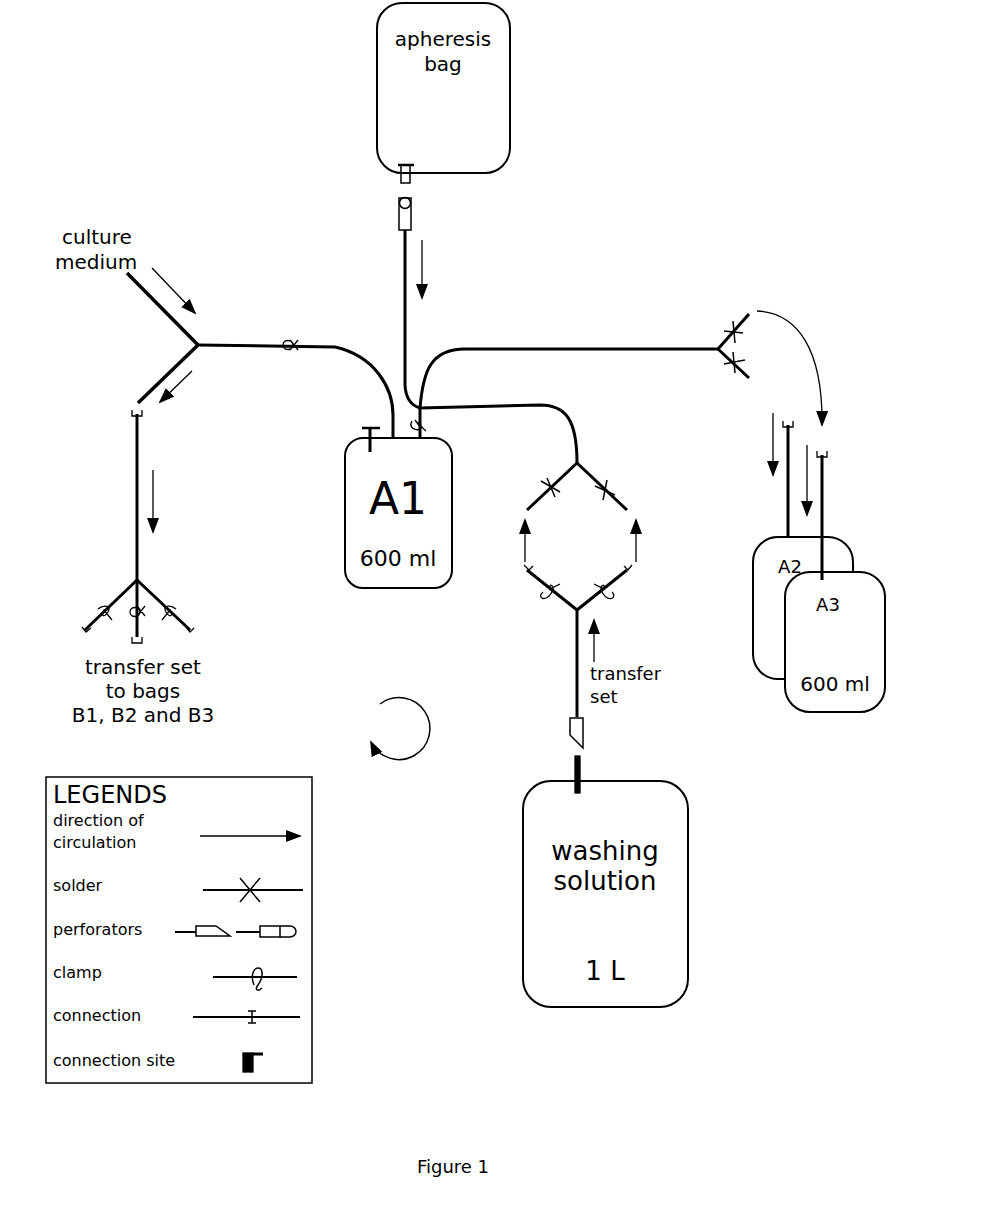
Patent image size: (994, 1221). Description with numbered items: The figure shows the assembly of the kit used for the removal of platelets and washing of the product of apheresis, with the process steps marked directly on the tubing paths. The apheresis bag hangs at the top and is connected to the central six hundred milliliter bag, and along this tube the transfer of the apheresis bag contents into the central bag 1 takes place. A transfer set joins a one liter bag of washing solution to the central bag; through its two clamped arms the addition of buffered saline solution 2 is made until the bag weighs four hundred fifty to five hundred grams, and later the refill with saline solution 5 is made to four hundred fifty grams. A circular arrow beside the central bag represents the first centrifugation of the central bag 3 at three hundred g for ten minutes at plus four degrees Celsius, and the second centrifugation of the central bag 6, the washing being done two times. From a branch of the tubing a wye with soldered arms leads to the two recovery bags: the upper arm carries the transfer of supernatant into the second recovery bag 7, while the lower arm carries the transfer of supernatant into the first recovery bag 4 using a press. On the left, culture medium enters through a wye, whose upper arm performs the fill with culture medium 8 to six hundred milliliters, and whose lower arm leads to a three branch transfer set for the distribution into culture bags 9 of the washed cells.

The transfer of apheresis bag contents into central bag 1 is at (393, 319).
The addition of buffered saline solution 2 is at (547, 598).
The first centrifugation of central bag 3 is at (400, 747).
The transfer of supernatant into first recovery bag 4 is at (715, 369).
The refill with saline solution 5 is at (605, 598).
The second centrifugation of central bag 6 is at (400, 723).
The transfer of supernatant into second recovery bag 7 is at (715, 328).
The fill with culture medium 8 is at (168, 303).
The distribution into culture bags 9 is at (174, 381).